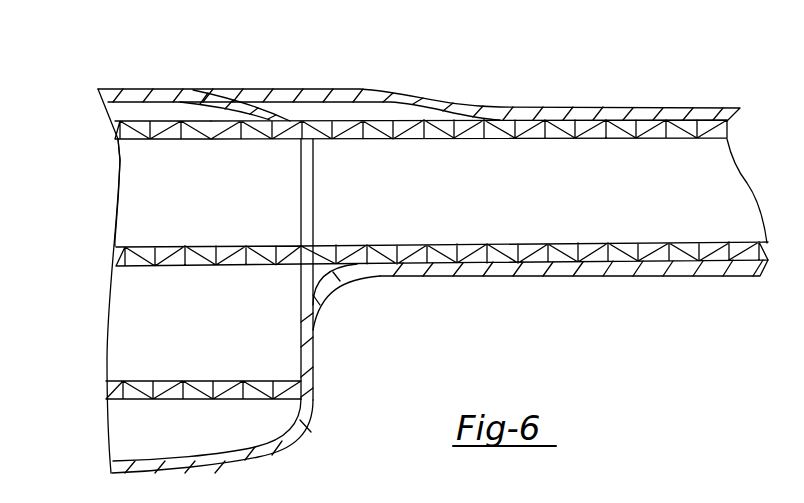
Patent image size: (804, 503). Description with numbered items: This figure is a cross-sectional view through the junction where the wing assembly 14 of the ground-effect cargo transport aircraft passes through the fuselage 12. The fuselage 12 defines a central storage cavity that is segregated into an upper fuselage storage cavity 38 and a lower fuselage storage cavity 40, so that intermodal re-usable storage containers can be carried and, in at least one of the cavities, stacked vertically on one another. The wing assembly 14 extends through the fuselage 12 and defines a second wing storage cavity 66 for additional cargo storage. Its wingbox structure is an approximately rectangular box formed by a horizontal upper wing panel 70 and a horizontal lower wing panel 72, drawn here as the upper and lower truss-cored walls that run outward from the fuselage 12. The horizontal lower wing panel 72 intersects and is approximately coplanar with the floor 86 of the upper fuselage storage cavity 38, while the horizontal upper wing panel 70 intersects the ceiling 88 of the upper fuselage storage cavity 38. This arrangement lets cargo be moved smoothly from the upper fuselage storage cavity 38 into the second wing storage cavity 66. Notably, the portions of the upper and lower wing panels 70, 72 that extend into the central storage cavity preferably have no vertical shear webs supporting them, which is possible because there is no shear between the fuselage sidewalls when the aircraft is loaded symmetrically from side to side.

The fuselage 12 is at (302, 114).
The wing assembly 14 is at (604, 103).
The upper fuselage storage cavity 38 is at (137, 192).
The lower fuselage storage cavity 40 is at (130, 292).
The second wing storage cavity 66 is at (633, 177).
The horizontal upper wing panel 70 is at (417, 140).
The horizontal lower wing panel 72 is at (587, 246).
The floor 86 is at (220, 252).
The ceiling 88 is at (137, 124).